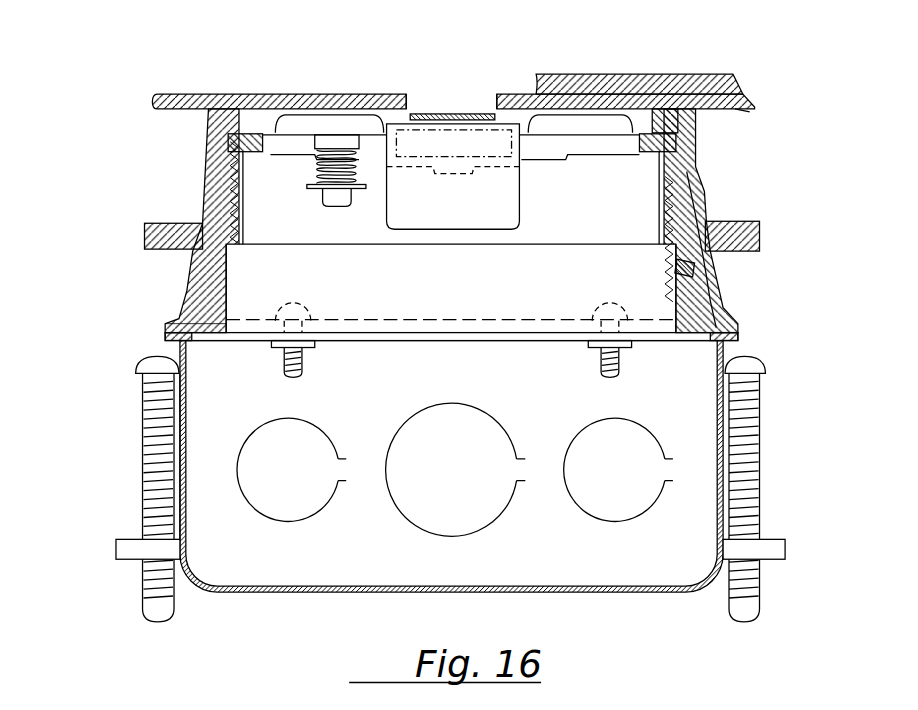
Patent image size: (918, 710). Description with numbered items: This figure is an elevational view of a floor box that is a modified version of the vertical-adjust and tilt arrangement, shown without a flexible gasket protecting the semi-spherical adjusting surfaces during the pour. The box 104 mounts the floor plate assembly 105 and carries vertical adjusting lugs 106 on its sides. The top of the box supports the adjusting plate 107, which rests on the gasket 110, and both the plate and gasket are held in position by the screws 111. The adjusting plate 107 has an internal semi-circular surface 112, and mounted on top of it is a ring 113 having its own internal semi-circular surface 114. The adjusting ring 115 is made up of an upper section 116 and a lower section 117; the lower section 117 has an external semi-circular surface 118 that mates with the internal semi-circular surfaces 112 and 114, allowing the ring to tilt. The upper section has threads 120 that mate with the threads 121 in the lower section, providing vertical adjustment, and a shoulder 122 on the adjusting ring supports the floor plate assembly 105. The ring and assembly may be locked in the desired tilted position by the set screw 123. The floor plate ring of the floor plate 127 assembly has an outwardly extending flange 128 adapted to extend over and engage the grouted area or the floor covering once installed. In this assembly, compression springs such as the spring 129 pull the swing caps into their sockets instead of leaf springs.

The box 104 is at (598, 590).
The floor plate assembly 105 is at (355, 94).
The vertical adjusting lugs 106 is at (142, 440).
The adjusting plate 107 is at (726, 307).
The gasket 110 is at (745, 331).
The screws 111 is at (297, 360).
The internal semi-circular surface 112 is at (196, 310).
The ring 113 is at (766, 236).
The internal semi-circular surface 114 is at (172, 250).
The adjusting ring 115 is at (700, 172).
The upper section 116 is at (697, 147).
The lower section 117 is at (700, 198).
The external semi-circular surface 118 is at (222, 283).
The threads 120 is at (205, 190).
The threads 121 is at (233, 213).
The shoulder 122 is at (656, 152).
The set screw 123 is at (674, 263).
The floor plate 127 is at (660, 108).
The outwardly extending flange 128 is at (750, 95).
The spring 129 is at (335, 180).